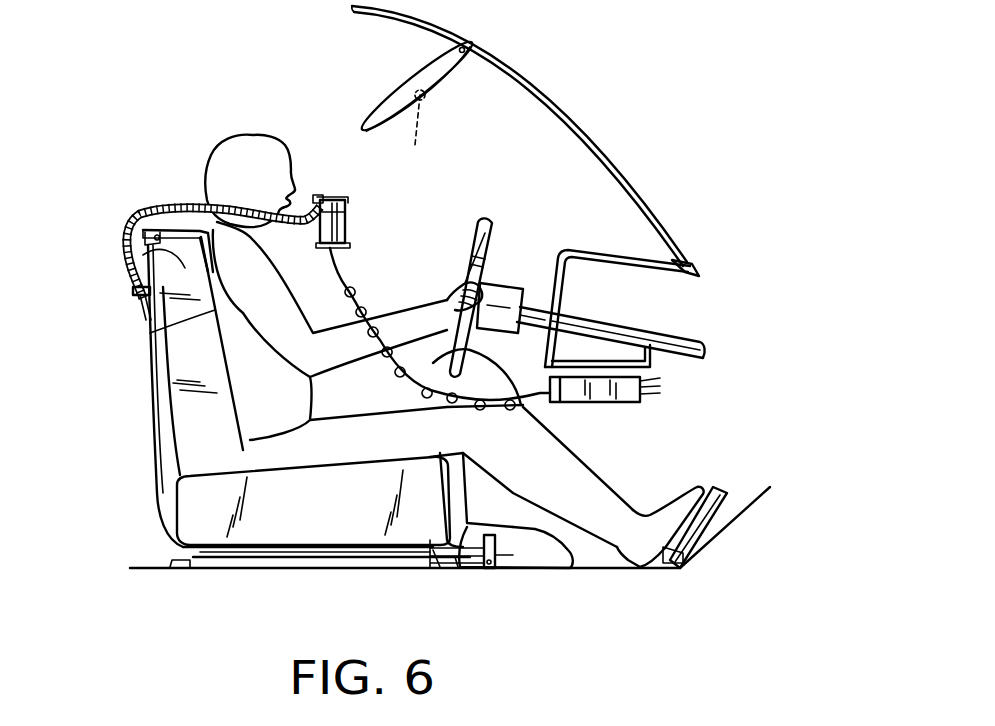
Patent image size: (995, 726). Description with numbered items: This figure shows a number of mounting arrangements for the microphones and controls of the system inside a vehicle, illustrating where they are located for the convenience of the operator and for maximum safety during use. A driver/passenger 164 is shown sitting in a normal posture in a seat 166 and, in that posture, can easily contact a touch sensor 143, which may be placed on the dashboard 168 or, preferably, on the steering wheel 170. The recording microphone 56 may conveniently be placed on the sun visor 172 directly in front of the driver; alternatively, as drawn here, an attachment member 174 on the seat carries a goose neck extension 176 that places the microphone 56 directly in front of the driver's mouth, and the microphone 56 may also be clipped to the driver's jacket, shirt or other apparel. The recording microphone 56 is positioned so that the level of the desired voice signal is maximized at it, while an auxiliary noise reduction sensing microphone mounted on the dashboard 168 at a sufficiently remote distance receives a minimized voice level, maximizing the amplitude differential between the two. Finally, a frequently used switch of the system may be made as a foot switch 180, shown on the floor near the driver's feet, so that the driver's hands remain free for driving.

The recording microphone 56 is at (350, 223).
The touch sensor 143 is at (470, 263).
The driver/passenger 164 is at (157, 333).
The seat 166 is at (253, 523).
The dashboard 168 is at (557, 256).
The steering wheel 170 is at (497, 203).
The sun visor 172 is at (412, 78).
The attachment member 174 is at (140, 275).
The goose neck extension 176 is at (160, 208).
The foot switch 180 is at (495, 543).